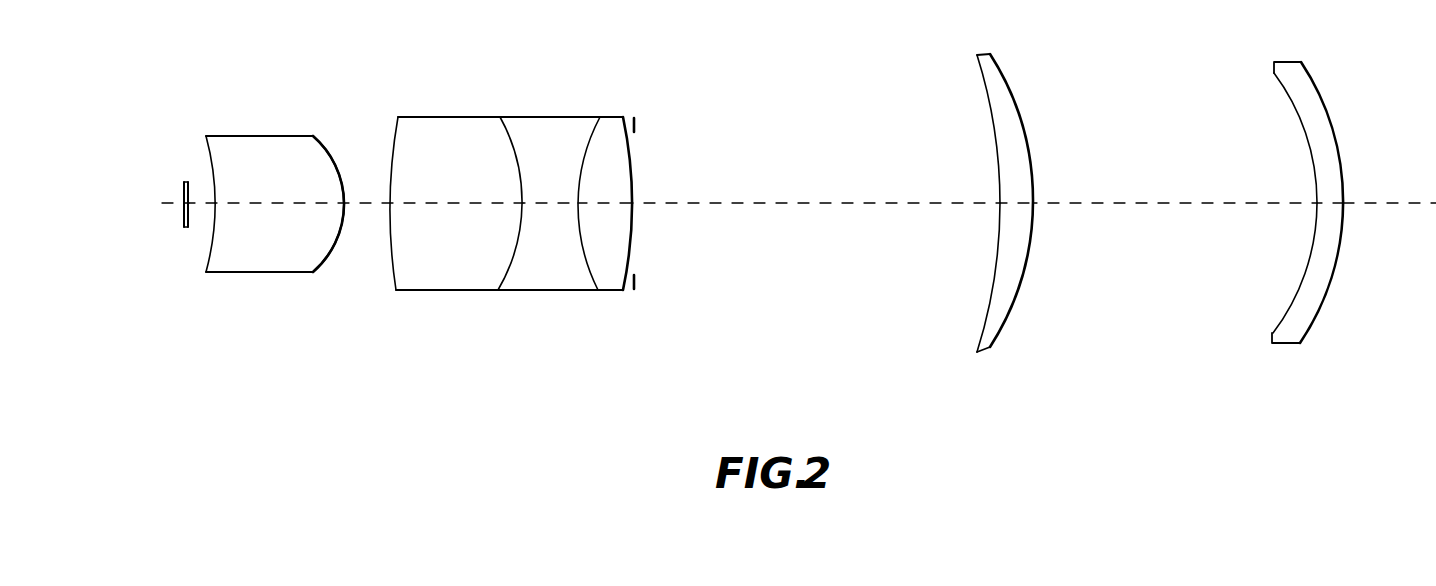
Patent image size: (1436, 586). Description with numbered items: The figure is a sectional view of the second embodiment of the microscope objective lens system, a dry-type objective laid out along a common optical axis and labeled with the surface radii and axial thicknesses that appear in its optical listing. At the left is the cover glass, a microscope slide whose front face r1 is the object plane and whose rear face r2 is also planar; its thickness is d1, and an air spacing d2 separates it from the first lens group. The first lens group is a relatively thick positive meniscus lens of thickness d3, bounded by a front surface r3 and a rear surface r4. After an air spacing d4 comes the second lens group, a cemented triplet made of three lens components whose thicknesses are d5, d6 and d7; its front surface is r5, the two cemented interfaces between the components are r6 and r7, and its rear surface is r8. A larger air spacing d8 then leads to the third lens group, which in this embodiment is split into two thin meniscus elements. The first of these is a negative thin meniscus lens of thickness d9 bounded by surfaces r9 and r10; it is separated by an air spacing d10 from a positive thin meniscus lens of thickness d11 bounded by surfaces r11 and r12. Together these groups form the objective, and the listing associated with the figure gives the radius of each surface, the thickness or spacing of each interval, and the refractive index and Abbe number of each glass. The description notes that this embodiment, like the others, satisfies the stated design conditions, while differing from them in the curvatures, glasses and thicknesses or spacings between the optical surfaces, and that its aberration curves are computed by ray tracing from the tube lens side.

The cover glass thickness d1 is at (182, 182).
The air spacing between cover glass and first lens group d2 is at (198, 202).
The first lens group thickness d3 is at (243, 203).
The air spacing between first and second lens groups d4 is at (358, 203).
The first triplet component thickness d5 is at (445, 203).
The second triplet component thickness d6 is at (540, 203).
The third triplet component thickness d7 is at (605, 203).
The air spacing between second and third lens groups d8 is at (758, 202).
The negative thin meniscus lens thickness d9 is at (1015, 202).
The air spacing within third lens group d10 is at (1182, 202).
The positive thin meniscus lens thickness d11 is at (1328, 202).
The object plane surface r1 is at (185, 225).
The rear cover glass surface r2 is at (189, 228).
The front surface of first lens group r3 is at (214, 228).
The rear surface of first lens group r4 is at (335, 257).
The front surface of cemented triplet r5 is at (390, 253).
The first cemented surface of triplet r6 is at (511, 250).
The second cemented surface of triplet r7 is at (580, 250).
The rear surface of cemented triplet r8 is at (633, 238).
The front surface of negative meniscus lens r9 is at (998, 260).
The rear surface of negative meniscus lens r10 is at (1027, 273).
The front surface of positive meniscus lens r11 is at (1307, 268).
The rear surface of positive meniscus lens r12 is at (1330, 288).